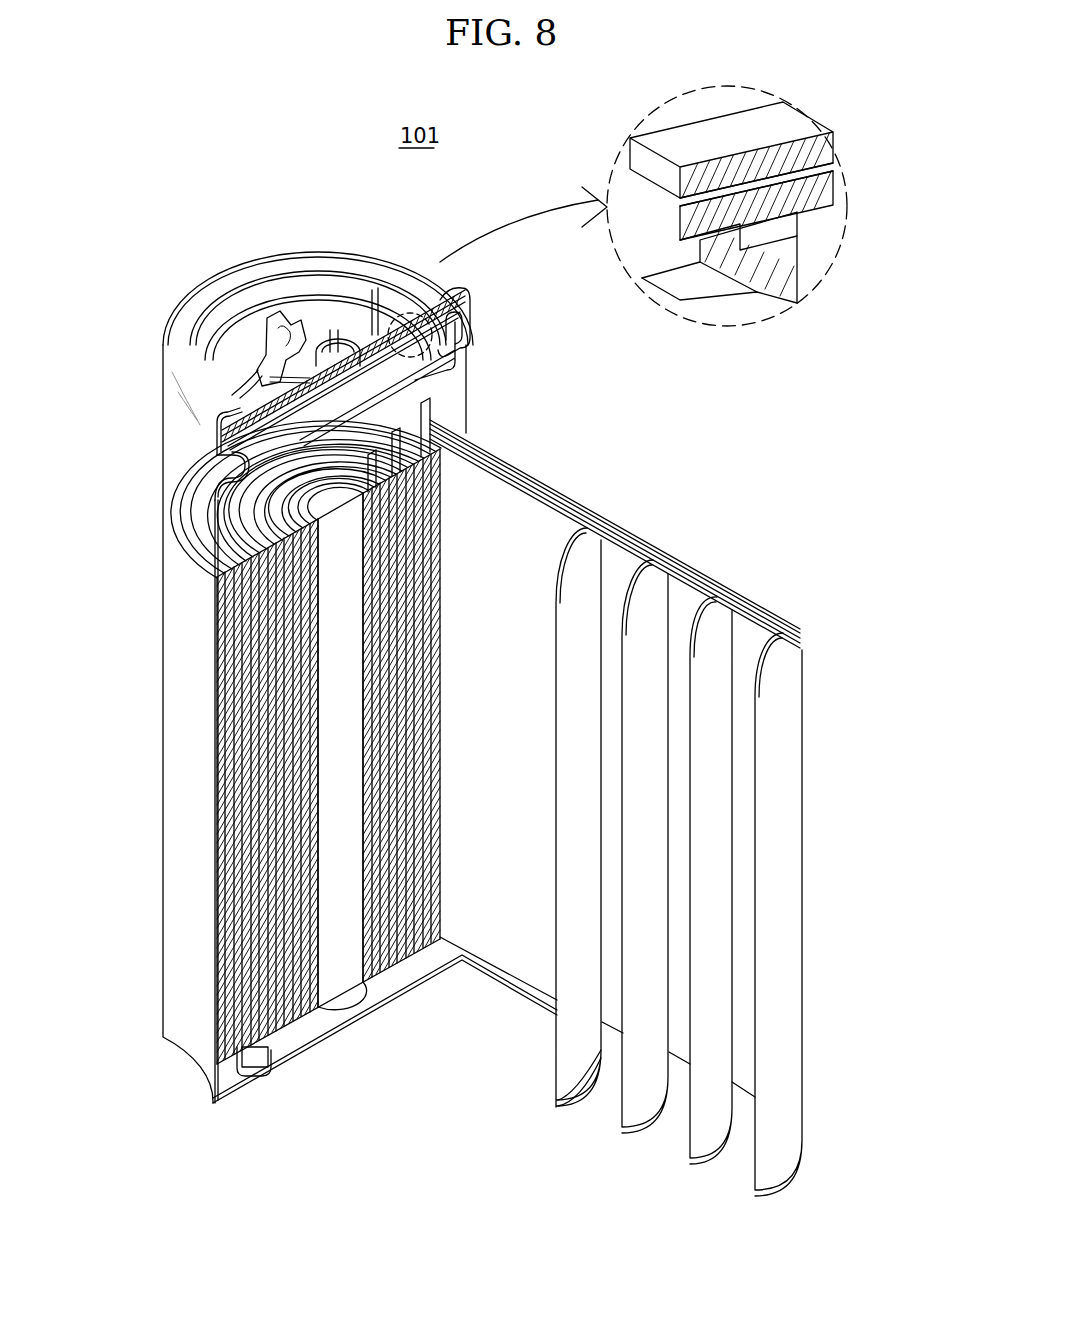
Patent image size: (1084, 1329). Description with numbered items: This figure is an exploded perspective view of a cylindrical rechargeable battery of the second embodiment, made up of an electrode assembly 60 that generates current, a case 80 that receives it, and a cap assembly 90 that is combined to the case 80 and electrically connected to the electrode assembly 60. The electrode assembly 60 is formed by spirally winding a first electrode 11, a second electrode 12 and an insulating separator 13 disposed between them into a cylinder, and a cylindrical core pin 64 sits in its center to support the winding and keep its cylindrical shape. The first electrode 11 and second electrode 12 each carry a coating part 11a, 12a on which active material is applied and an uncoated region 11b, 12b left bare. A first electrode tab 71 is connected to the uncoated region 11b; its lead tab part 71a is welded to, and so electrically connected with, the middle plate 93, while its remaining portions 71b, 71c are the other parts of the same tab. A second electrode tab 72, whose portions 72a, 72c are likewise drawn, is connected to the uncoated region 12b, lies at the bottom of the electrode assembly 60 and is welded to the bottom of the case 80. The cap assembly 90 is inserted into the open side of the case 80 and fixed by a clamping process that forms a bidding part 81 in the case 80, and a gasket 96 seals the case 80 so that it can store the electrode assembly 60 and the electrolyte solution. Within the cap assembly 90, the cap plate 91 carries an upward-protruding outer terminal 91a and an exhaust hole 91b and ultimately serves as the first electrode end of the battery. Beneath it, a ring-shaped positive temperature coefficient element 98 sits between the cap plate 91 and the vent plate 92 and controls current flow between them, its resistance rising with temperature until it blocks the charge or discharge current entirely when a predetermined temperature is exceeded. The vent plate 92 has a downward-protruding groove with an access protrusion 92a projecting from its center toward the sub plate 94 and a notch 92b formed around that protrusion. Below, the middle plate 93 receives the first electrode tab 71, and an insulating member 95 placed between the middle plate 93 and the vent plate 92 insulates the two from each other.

The first electrode 11 is at (684, 839).
The coating part 11a is at (723, 677).
The uncoated region 11b is at (697, 577).
The second electrode 12 is at (553, 1130).
The coating part 12a is at (563, 1053).
The uncoated region 12b is at (565, 1103).
The separator 13 is at (643, 1113).
The electrode assembly 60 is at (405, 966).
The core pin 64 is at (343, 960).
The first electrode tab 71 is at (610, 517).
The lead tab part 71a is at (420, 392).
The tab second portion 71b is at (437, 403).
The tab third portion 71c is at (420, 452).
The second electrode tab 72 is at (479, 1047).
The second current collecting plate portion 72a is at (268, 1073).
The second current collecting plate bent portion 72c is at (268, 1090).
The case 80 is at (165, 666).
The bidding part 81 is at (232, 474).
The cap assembly 90 is at (560, 271).
The cap plate 91 is at (428, 305).
The outer terminal 91a is at (292, 312).
The exhaust hole 91b is at (283, 367).
The vent plate 92 is at (450, 344).
The access protrusion 92a is at (318, 338).
The notch 92b is at (375, 320).
The middle plate 93 is at (720, 297).
The sub plate 94 is at (400, 378).
The insulating member 95 is at (777, 203).
The gasket 96 is at (236, 414).
The positive temperature coefficient element 98 is at (466, 302).